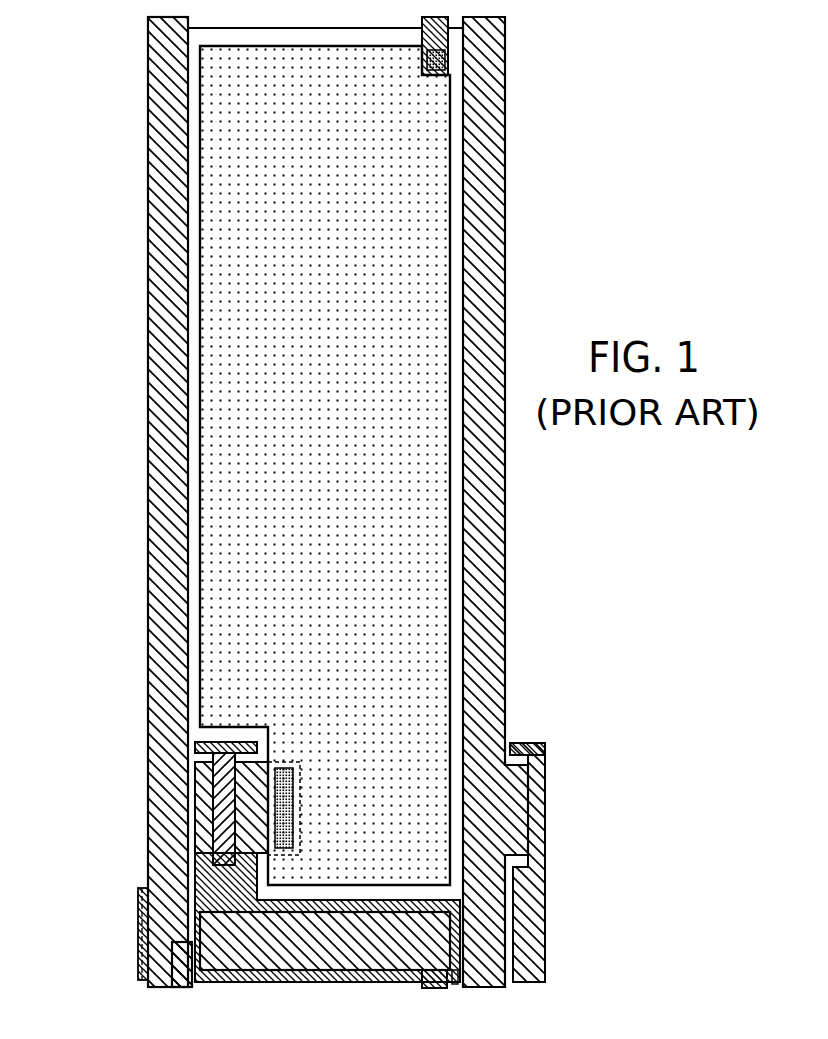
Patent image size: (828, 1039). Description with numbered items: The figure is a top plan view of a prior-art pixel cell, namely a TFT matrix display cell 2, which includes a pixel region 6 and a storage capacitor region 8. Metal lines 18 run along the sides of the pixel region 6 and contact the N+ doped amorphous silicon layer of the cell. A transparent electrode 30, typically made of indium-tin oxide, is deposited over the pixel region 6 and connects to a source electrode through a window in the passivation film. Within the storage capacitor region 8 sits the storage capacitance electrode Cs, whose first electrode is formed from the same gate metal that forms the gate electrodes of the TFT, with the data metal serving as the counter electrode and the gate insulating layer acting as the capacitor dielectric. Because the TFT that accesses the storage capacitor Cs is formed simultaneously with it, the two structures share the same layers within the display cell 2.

The pixel region 6 is at (120, 52).
The metal lines 18 is at (148, 72).
The transparent electrode 30 is at (428, 233).
The thin film transistor TFT is at (208, 797).
The storage capacitor region 8 is at (102, 877).
The storage capacitance electrode Cs is at (291, 955).
The TFT matrix display cell 2 is at (483, 1020).